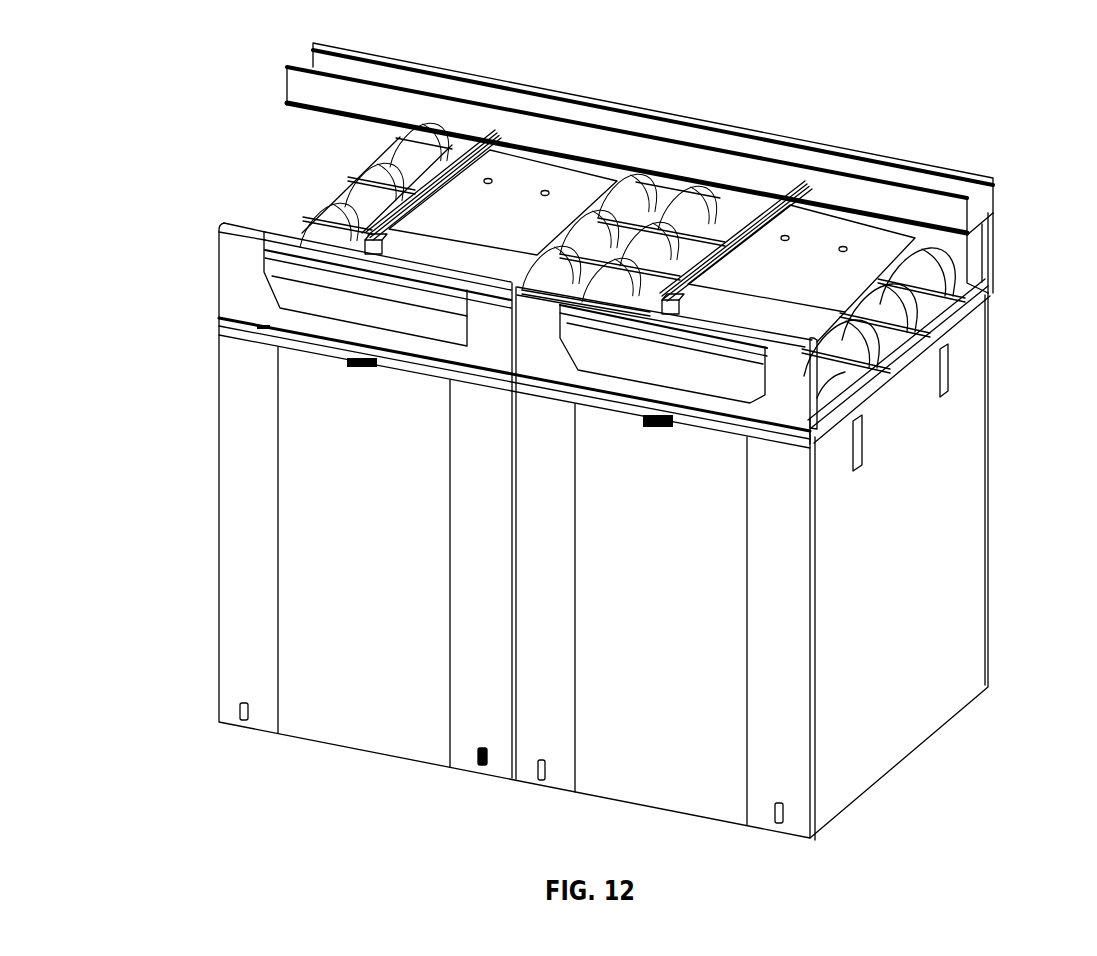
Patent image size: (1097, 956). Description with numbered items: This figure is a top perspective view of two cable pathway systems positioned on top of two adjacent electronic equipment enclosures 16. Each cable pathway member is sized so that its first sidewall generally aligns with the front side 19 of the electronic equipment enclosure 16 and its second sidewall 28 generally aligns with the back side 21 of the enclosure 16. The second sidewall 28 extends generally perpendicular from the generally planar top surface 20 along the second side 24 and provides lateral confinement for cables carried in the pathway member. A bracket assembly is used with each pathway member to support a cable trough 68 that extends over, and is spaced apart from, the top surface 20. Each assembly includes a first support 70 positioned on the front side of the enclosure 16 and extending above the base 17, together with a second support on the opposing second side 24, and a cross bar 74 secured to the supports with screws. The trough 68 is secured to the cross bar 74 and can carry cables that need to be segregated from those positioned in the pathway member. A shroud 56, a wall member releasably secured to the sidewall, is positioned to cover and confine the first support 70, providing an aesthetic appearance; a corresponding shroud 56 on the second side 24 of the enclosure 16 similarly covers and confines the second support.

The electronic equipment enclosure 16 is at (603, 544).
The base 17 is at (945, 326).
The front side 19 is at (368, 680).
The generally planar top surface 20 is at (498, 218).
The back side 21 is at (997, 508).
The second side 24 is at (999, 243).
The second sidewall 28 is at (989, 258).
The shroud 56 is at (238, 273).
The cable trough 68 is at (766, 130).
The first support 70 is at (410, 236).
The cross bar 74 is at (452, 158).